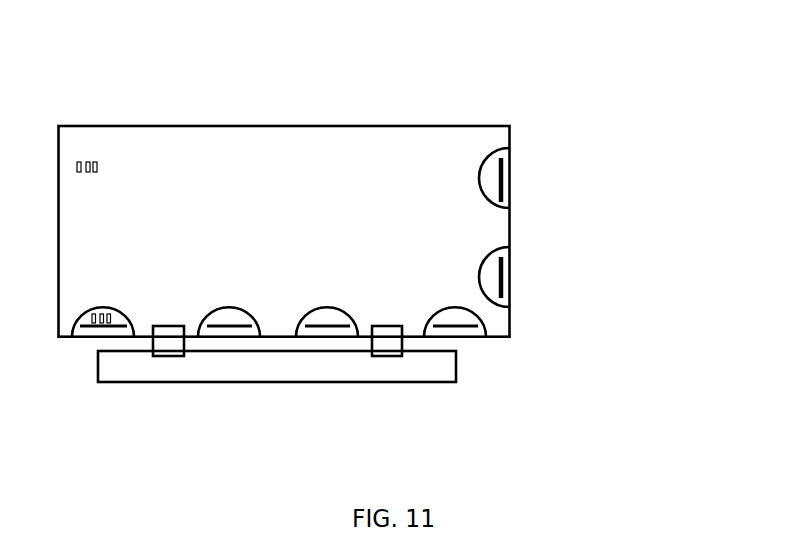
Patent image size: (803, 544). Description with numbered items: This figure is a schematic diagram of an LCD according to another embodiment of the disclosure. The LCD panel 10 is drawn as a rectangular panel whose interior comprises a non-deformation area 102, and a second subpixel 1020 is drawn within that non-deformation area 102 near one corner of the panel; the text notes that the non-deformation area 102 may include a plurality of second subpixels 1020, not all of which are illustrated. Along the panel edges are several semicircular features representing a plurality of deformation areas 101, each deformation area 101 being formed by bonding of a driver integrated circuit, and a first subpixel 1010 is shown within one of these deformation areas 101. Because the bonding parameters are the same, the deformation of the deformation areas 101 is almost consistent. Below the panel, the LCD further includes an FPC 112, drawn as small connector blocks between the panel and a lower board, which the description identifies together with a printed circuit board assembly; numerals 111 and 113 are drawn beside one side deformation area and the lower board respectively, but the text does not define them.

The LCD panel 10 is at (373, 250).
The non-deformation area 102 is at (288, 211).
The second subpixel 1020 is at (177, 117).
The first subpixel 1010 is at (212, 219).
The deformation area 101 is at (583, 141).
The side light emitting unit 111 is at (581, 241).
The FPC 112 is at (352, 400).
The circuit board 113 is at (277, 414).